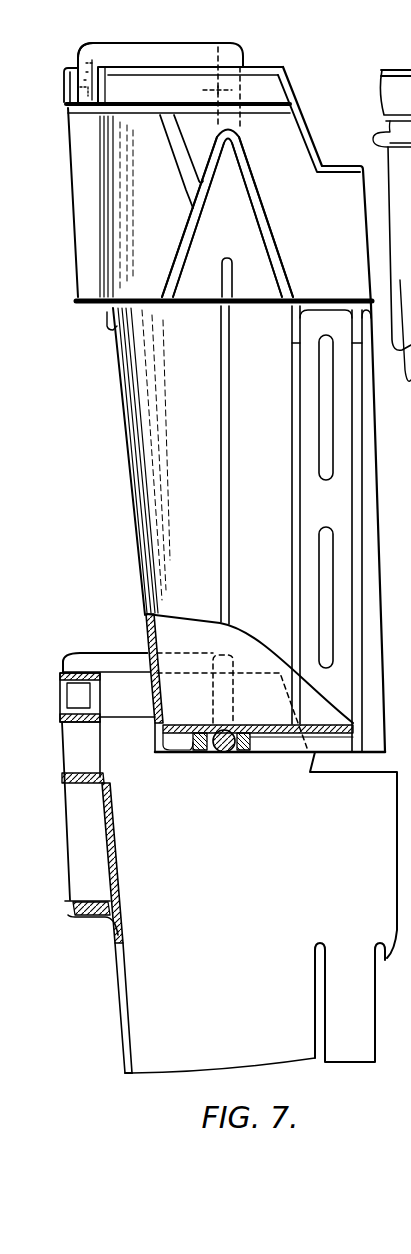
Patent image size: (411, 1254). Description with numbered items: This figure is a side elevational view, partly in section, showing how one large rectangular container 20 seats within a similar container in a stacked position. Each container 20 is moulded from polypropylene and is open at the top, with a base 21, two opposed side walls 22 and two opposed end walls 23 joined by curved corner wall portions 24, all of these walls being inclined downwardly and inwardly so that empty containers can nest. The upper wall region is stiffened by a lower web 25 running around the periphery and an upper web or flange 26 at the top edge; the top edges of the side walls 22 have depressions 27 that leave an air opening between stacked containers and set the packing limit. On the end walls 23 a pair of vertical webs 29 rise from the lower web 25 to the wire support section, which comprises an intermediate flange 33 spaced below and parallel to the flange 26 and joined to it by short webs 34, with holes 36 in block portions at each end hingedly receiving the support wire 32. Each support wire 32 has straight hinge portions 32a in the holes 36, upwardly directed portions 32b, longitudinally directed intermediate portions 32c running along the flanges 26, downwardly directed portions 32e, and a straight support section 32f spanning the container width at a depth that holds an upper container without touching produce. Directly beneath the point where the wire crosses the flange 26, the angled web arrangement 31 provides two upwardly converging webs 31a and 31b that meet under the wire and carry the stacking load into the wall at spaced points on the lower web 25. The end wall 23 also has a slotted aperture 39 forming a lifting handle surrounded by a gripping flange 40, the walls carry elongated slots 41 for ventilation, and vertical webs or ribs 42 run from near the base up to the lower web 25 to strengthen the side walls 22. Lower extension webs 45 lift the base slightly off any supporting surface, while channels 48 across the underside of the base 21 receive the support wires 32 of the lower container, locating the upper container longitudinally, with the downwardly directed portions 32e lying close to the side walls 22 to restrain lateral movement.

The rectangular container 20 is at (125, 443).
The base 21 is at (325, 740).
The side walls 22 is at (244, 457).
The end walls 23 is at (135, 523).
The curved corner wall portions 24 is at (127, 395).
The lower web 25 is at (198, 303).
The upper web or flange 26 is at (267, 68).
The depressions 27 is at (333, 137).
The vertical webs 29 is at (83, 208).
The angled webs 31 is at (180, 217).
The upwardly converging web 31a is at (185, 235).
The upwardly converging web 31b is at (270, 230).
The support wires 32 is at (182, 53).
The straight hinge portions 32a is at (78, 90).
The upwardly directed portions 32b is at (93, 60).
The longitudinally directed intermediate portions 32c is at (122, 50).
The downwardly directed portions 32e is at (215, 700).
The straight support section 32f is at (228, 753).
The intermediate flange 33 is at (87, 713).
The short webs 34 is at (62, 712).
The holes 36 is at (68, 98).
The slotted aperture 39 is at (72, 767).
The flange 40 is at (80, 797).
The elongated slots 41 is at (323, 545).
The vertical webs or ribs 42 is at (295, 498).
The lower extension webs 45 is at (155, 752).
The channels 48 is at (207, 752).